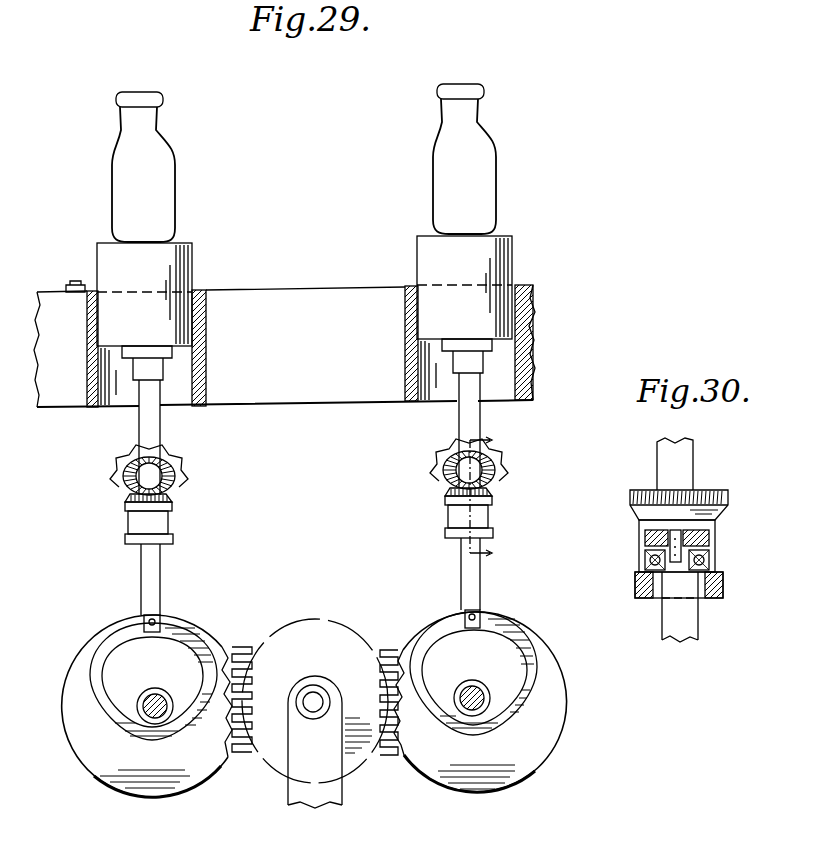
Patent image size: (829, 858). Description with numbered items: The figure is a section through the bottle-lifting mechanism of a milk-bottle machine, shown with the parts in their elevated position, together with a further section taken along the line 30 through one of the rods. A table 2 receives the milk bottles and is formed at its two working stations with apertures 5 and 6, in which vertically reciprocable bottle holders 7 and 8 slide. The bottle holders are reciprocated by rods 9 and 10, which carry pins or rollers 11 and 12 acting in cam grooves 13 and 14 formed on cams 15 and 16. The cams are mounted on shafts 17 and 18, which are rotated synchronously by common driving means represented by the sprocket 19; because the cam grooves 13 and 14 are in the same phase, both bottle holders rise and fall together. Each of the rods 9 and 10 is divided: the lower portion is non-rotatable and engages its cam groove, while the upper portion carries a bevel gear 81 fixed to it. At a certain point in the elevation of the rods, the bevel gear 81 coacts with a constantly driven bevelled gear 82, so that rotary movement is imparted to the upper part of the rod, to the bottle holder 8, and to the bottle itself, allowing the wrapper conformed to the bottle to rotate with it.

In FIG. 29, the table 2 is at (296, 291).
In FIG. 29, the aperture 5 is at (178, 399).
In FIG. 29, the aperture 6 is at (433, 389).
In FIG. 29, the bottle holder 7 is at (101, 242).
In FIG. 29, the bottle holder 8 is at (417, 239).
In FIG. 29, the rod 9 is at (148, 440).
In FIG. 29, the rod 10 is at (466, 430).
In FIG. 30, the rod 10 is at (684, 457).
In FIG. 29, the pin or roller 11 is at (143, 614).
In FIG. 29, the pin or roller 12 is at (486, 616).
In FIG. 29, the cam groove 13 is at (188, 632).
In FIG. 29, the cam groove 14 is at (527, 643).
In FIG. 29, the cam 15 is at (186, 776).
In FIG. 29, the cam 16 is at (460, 778).
In FIG. 29, the shaft 17 is at (140, 710).
In FIG. 29, the shaft 18 is at (490, 700).
In FIG. 29, the sprocket 19 is at (312, 637).
In FIG. 29, the section line 30 is at (495, 496).
In FIG. 29, the bevel gear 81 is at (174, 494).
In FIG. 30, the bevel gear 81 is at (632, 500).
In FIG. 29, the bevelled gear 82 is at (176, 470).